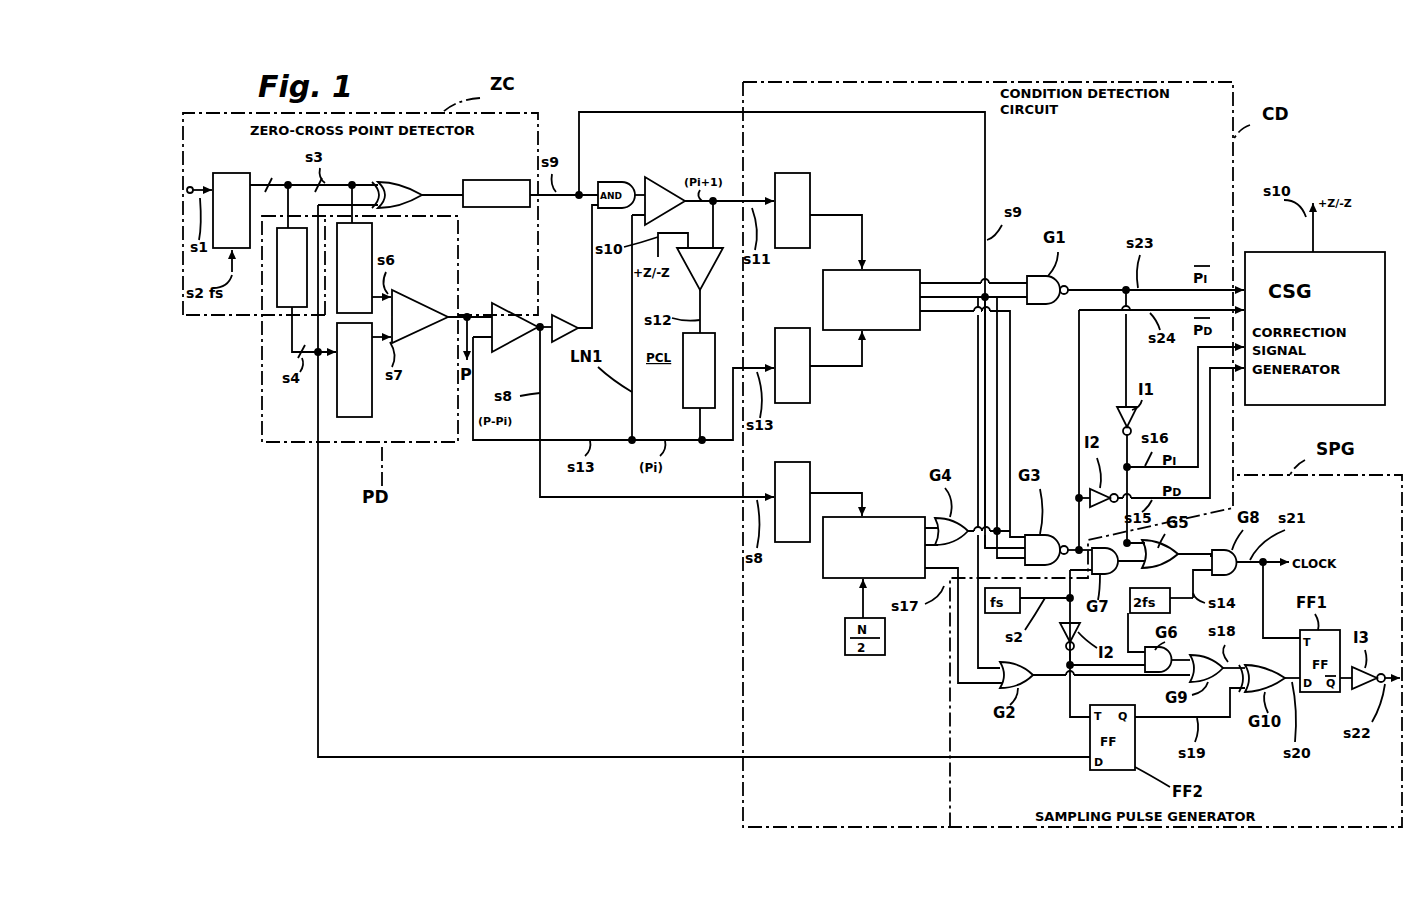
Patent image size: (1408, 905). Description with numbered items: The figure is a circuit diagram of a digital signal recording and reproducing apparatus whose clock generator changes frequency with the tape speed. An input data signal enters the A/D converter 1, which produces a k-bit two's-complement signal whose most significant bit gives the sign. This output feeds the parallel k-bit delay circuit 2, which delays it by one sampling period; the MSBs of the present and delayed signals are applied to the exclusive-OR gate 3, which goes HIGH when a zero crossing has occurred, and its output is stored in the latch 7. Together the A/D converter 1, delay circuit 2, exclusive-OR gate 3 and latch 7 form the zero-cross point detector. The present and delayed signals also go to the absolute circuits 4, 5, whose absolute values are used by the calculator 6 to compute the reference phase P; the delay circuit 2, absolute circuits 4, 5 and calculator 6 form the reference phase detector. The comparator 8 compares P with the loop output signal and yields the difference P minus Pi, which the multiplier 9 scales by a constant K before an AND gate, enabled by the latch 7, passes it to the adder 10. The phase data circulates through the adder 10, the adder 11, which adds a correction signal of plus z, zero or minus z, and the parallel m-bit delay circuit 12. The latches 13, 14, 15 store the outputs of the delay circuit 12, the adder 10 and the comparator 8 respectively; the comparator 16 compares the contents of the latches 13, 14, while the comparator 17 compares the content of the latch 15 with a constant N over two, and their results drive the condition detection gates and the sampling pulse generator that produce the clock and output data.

The A/D converter 1 is at (232, 173).
The parallel k-bit delay circuit 2 is at (270, 308).
The exclusive-OR gate 3 is at (402, 182).
The absolute circuit 4 is at (372, 240).
The absolute circuit 5 is at (372, 400).
The calculator 6 is at (418, 300).
The latch 7 is at (472, 180).
The comparator 8 is at (515, 302).
The multiplier 9 is at (558, 312).
The adder 10 is at (663, 177).
The adder 11 is at (716, 270).
The parallel m-bit delay circuit 12 is at (683, 395).
The latch 13 is at (794, 328).
The latch 14 is at (793, 173).
The latch 15 is at (794, 462).
The comparator 16 is at (880, 268).
The comparator 17 is at (870, 516).